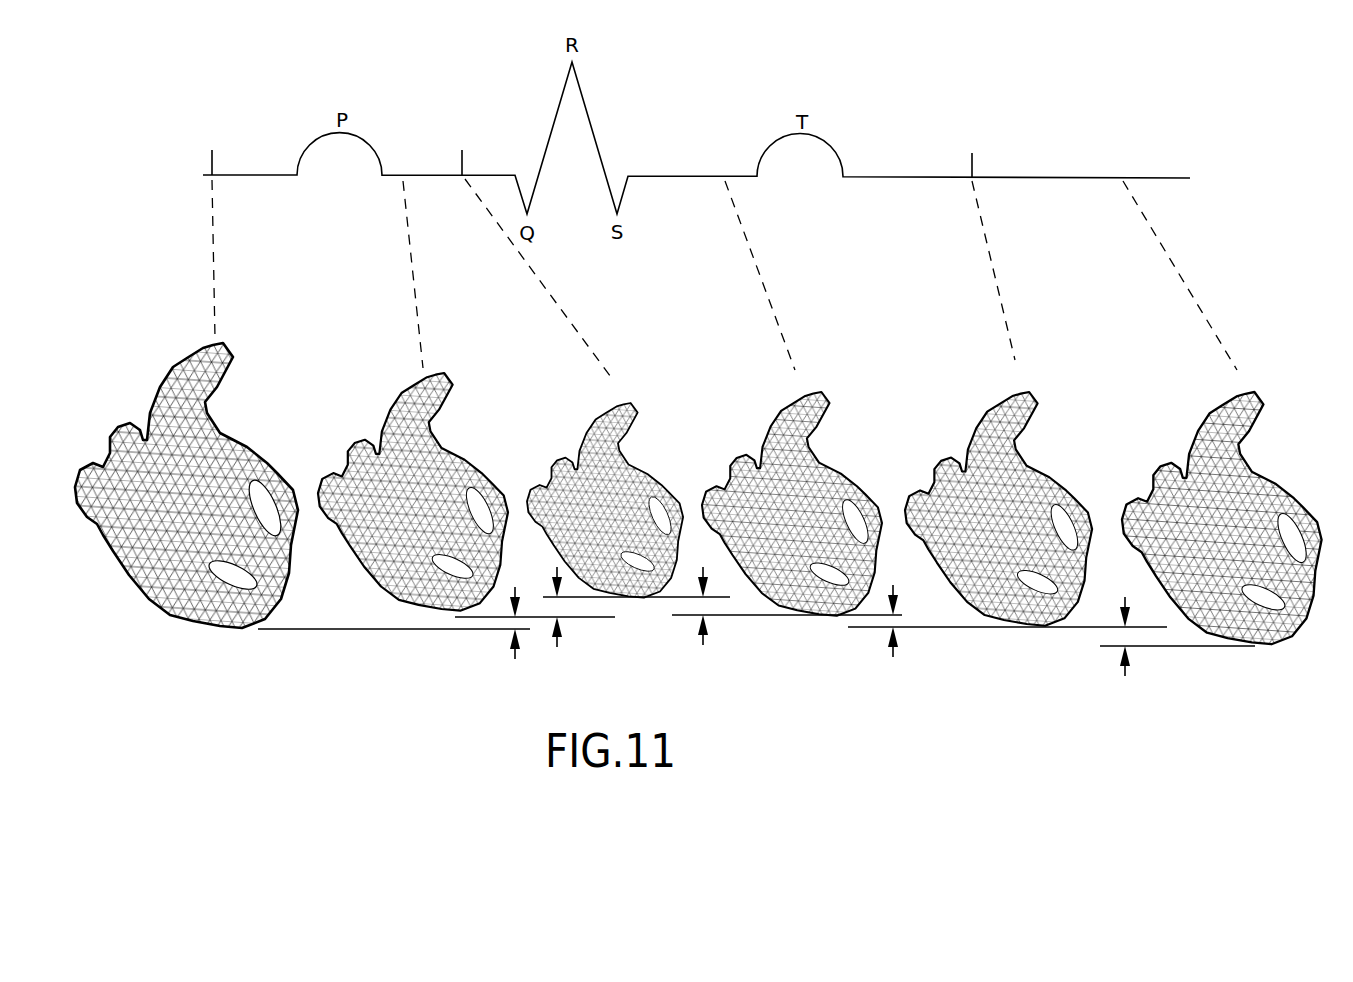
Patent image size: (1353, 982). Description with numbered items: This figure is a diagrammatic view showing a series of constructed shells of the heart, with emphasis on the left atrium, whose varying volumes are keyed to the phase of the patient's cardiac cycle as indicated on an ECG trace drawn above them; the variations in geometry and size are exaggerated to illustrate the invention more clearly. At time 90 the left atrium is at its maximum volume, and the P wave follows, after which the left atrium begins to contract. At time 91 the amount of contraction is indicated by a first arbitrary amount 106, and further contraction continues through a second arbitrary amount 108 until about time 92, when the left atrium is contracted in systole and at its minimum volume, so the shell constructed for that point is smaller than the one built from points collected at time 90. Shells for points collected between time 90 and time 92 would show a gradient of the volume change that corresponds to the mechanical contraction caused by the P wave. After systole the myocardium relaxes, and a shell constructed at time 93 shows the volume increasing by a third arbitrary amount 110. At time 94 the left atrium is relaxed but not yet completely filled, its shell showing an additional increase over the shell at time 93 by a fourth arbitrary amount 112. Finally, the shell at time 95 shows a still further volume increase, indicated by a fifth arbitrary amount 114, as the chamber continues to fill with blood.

The time 90 is at (212, 150).
The time 91 is at (404, 184).
The time 92 is at (463, 150).
The time 93 is at (726, 186).
The time 94 is at (972, 155).
The time 95 is at (1123, 186).
The first arbitrary amount 106 is at (515, 660).
The second arbitrary amount 108 is at (557, 646).
The third arbitrary amount 110 is at (703, 644).
The fourth arbitrary amount 112 is at (893, 656).
The fifth arbitrary amount 114 is at (1125, 677).